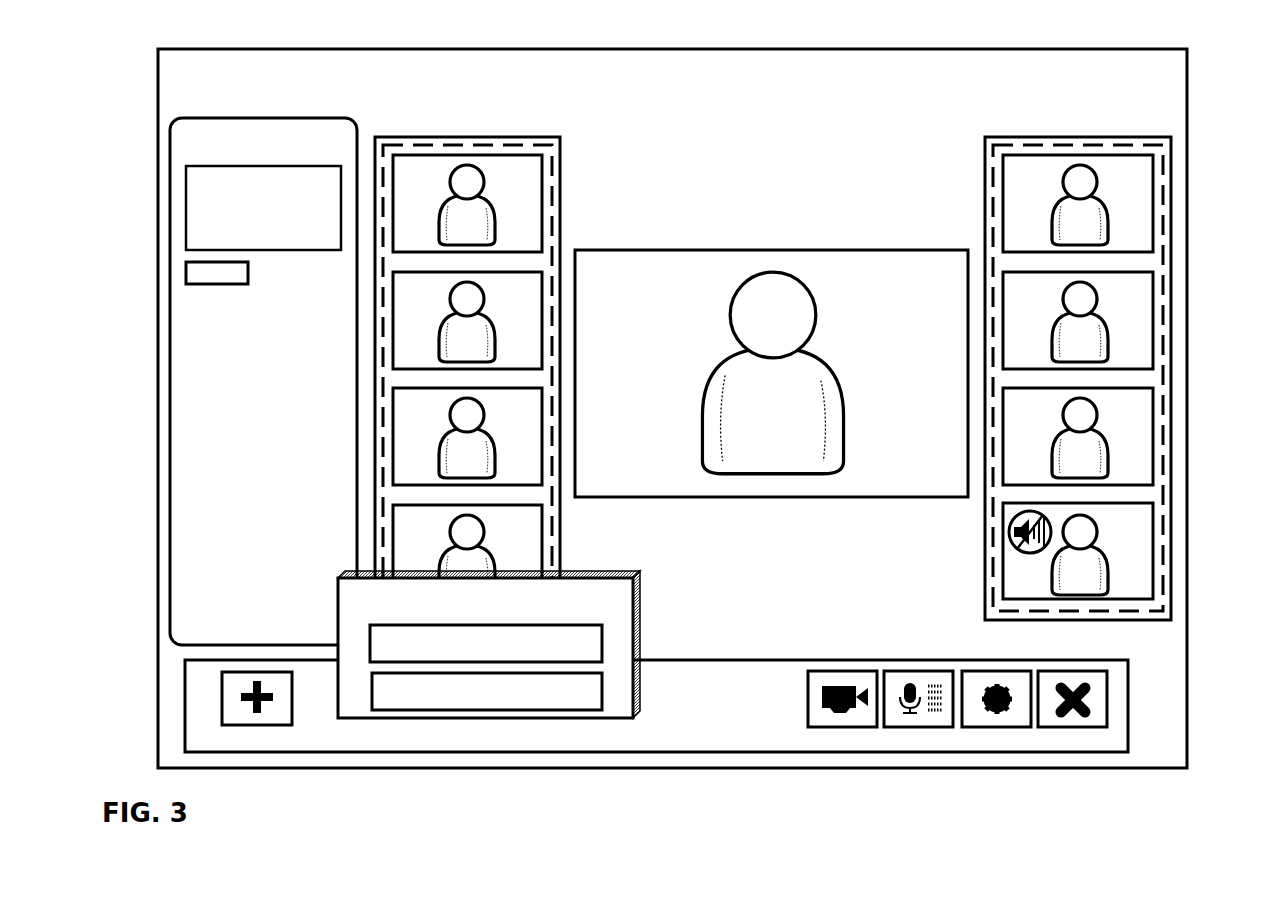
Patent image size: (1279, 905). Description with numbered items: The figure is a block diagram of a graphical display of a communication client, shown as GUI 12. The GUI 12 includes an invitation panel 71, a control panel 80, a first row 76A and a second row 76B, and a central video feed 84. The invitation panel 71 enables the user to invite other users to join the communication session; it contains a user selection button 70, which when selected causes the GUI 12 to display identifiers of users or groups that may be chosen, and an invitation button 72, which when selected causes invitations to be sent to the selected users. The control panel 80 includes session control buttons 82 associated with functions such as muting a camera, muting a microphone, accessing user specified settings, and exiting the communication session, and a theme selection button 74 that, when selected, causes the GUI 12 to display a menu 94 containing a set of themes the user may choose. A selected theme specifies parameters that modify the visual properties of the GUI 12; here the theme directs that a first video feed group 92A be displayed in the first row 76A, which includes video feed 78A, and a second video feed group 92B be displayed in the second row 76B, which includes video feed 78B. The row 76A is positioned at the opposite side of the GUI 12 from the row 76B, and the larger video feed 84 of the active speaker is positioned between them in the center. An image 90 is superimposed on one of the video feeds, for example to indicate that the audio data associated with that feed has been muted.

The GUI 12 is at (714, 106).
The user selection button 70 is at (186, 208).
The invitation panel 71 is at (228, 355).
The invitation button 72 is at (186, 274).
The theme selection button 74 is at (222, 698).
The row 76A is at (514, 364).
The row 76B is at (1083, 345).
The video feed 78A is at (545, 235).
The video feed 78B is at (1153, 198).
The control panel 80 is at (666, 725).
The session control buttons 82 is at (953, 765).
The video feed 84 is at (721, 512).
The image 90 is at (1007, 532).
The first video feed group 92A is at (552, 552).
The second video feed group 92B is at (992, 217).
The menu 94 is at (640, 647).